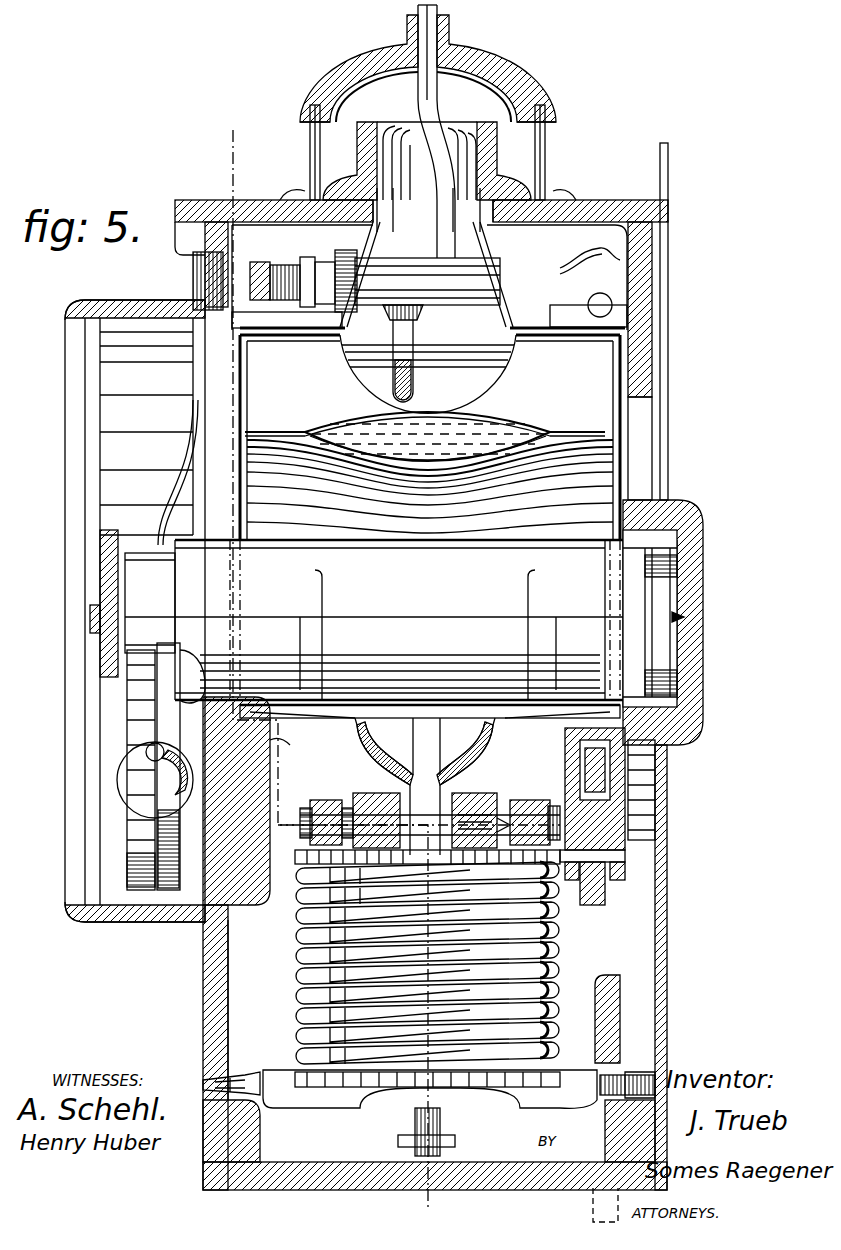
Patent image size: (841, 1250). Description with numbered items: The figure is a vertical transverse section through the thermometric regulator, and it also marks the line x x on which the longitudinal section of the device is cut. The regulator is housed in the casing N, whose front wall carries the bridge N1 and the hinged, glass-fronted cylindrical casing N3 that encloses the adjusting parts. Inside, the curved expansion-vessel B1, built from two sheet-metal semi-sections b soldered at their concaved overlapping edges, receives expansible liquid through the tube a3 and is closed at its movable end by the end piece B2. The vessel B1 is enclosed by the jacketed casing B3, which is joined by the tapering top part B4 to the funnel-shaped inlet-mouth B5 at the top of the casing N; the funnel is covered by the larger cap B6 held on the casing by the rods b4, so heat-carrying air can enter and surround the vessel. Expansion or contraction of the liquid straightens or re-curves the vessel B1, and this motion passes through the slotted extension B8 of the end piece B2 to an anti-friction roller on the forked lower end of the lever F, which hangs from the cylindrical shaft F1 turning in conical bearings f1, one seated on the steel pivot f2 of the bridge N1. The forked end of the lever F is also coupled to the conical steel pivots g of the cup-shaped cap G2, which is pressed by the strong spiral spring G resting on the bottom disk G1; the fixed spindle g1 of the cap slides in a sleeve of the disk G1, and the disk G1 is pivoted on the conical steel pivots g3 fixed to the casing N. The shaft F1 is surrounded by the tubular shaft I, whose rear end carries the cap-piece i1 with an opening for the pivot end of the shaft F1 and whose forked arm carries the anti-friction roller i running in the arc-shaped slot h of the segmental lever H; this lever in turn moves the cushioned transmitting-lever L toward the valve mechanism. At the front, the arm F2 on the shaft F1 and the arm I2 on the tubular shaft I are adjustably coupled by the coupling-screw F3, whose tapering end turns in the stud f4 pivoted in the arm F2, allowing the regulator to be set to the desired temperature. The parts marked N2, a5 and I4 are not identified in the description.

The casing N is at (427, 666).
The bridge N1 is at (100, 655).
The right end block of casing N2 is at (675, 622).
The hinged cylindrical casing N3 is at (135, 625).
The cap B6 is at (428, 68).
The tube a3 is at (440, 90).
The rods b4 is at (553, 160).
The funnel-shaped inlet-mouth B5 is at (507, 160).
The shaft a5 is at (330, 258).
The tapering top part B4 is at (429, 317).
The jacketed casing B3 is at (430, 437).
The sheet-metal semi-sections b is at (503, 470).
The expansion-vessel B1 is at (430, 486).
The tubular shaft I is at (401, 620).
The steel pivot f2 is at (90, 618).
The arm F2 is at (118, 875).
The arm I2 is at (180, 860).
The stud f4 is at (146, 752).
The coupling-screw F3 is at (125, 788).
The end piece B2 is at (520, 722).
The slotted extension B8 is at (445, 792).
The cylindrical shaft F1 is at (378, 794).
The lever F is at (479, 809).
The conical steel pivots g is at (548, 806).
The segmental lever H is at (565, 768).
The anti-friction roller i is at (625, 870).
The arc-shaped slot h is at (605, 880).
The guide I4 is at (641, 790).
The cup-shaped cap G2 is at (427, 862).
The spiral spring G is at (416, 963).
The transmitting-lever L is at (616, 1019).
The conical steel pivots g3 is at (658, 1076).
The bottom disk G1 is at (430, 1091).
The fixed spindle g1 is at (440, 1137).
The cap-piece i1 is at (700, 672).
The conical bearings f1 is at (684, 617).
The section line x is at (333, 669).